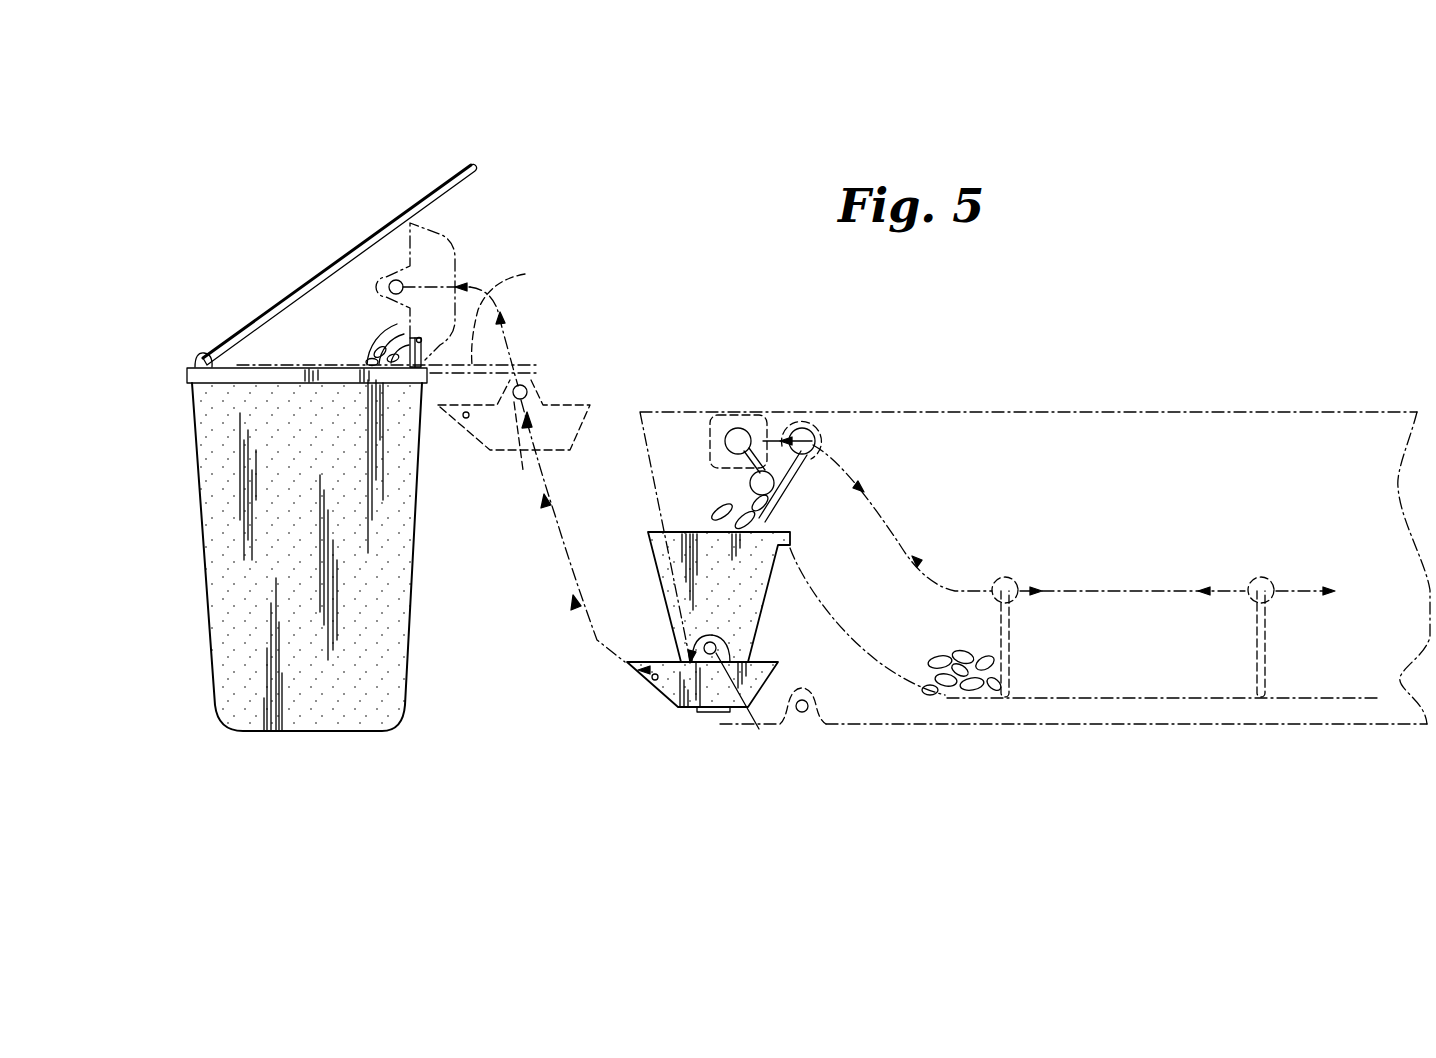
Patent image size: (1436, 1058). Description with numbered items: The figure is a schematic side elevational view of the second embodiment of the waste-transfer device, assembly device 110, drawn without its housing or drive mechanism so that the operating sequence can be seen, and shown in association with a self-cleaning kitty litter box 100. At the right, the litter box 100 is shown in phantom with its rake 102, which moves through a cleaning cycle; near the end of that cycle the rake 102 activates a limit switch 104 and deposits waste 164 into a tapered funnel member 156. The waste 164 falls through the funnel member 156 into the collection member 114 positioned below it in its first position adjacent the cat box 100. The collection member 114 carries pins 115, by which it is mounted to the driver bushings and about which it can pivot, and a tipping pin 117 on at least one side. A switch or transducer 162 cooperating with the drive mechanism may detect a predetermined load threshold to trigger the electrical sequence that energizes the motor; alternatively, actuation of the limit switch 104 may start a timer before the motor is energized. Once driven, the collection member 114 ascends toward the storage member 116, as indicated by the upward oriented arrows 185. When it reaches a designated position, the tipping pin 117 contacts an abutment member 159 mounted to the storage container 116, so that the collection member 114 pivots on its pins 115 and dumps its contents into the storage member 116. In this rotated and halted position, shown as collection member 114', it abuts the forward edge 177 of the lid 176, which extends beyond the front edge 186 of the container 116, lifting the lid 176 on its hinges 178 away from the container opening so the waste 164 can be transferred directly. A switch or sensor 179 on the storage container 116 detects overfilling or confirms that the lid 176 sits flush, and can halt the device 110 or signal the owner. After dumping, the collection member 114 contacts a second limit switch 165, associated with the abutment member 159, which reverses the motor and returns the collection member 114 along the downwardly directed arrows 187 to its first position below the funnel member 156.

The self-cleaning kitty litter box 100 is at (1231, 423).
The rake 102 is at (815, 445).
The limit switch 104 is at (767, 430).
The assembly device 110 is at (597, 313).
The collection member 114 is at (702, 738).
The collection member in rotated position 114' is at (520, 326).
The pins 115 is at (753, 710).
The storage member 116 is at (382, 663).
The tipping pin 117 is at (653, 682).
The funnel member 156 is at (660, 560).
The abutment member 159 is at (390, 337).
The switch or transducer 162 is at (708, 715).
The waste 164 is at (367, 343).
The second limit switch 165 is at (420, 384).
The lid 176 is at (360, 242).
The forward edge of lid 177 is at (475, 167).
The hinges 178 is at (200, 360).
The switch or sensor 179 is at (258, 368).
The upward oriented arrows 185 is at (523, 500).
The front edge of container 186 is at (431, 405).
The downwardly directed arrows 187 is at (548, 510).